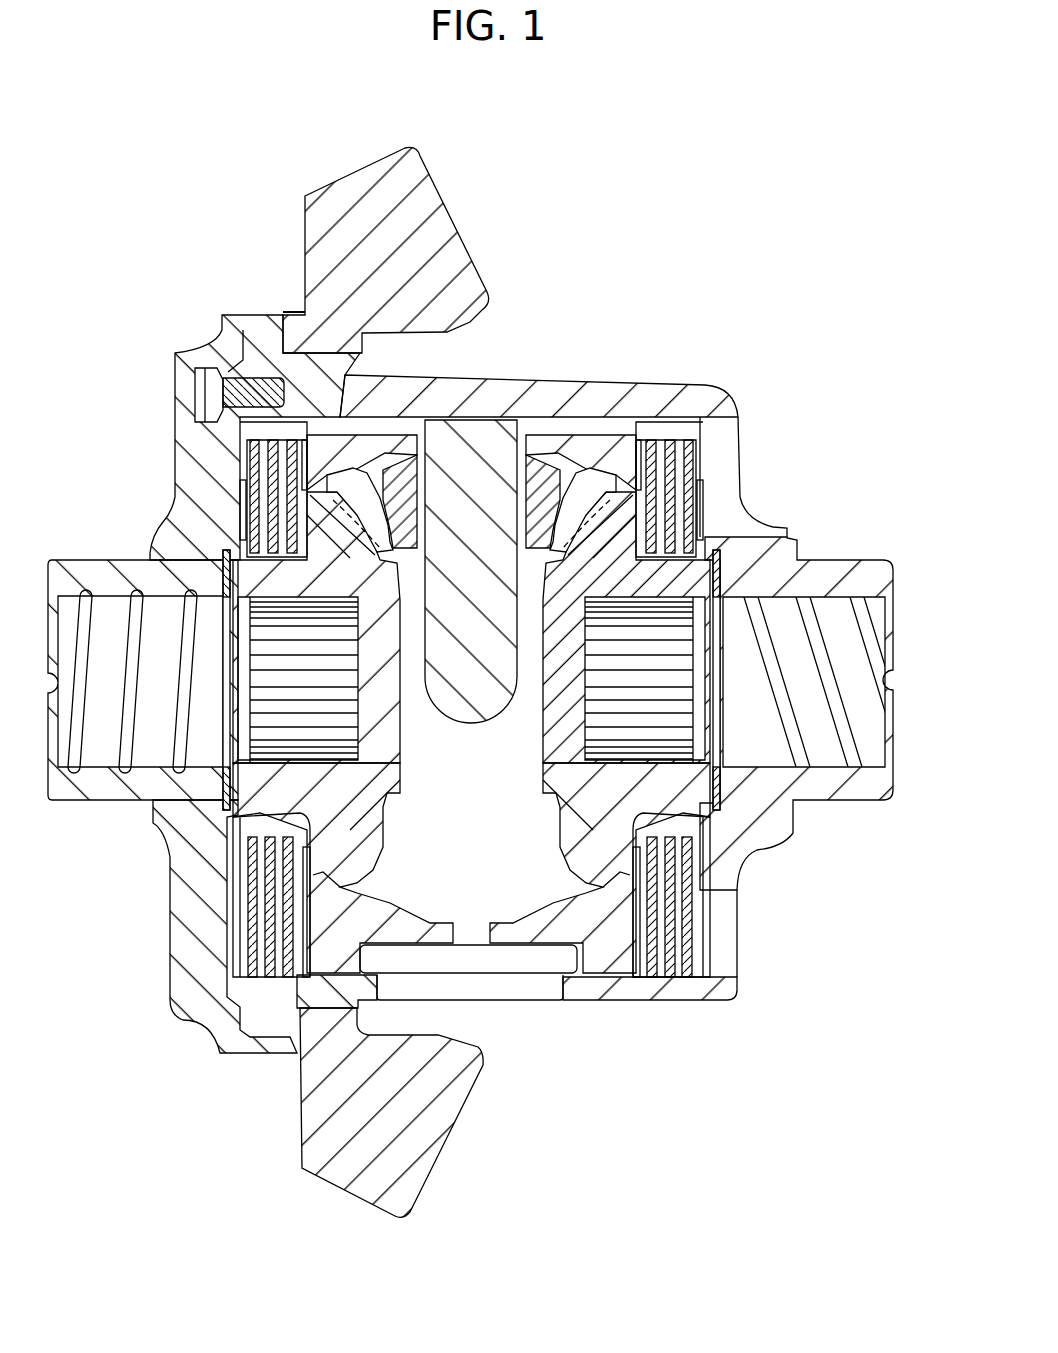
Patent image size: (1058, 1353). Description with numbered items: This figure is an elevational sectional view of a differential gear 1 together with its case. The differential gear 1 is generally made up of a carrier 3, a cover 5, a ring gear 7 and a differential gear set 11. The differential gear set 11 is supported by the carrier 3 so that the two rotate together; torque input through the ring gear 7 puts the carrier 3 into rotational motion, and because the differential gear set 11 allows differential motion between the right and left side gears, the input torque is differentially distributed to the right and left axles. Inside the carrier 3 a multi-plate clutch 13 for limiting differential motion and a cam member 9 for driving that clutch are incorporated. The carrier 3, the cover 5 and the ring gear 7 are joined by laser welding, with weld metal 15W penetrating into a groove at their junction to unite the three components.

The differential gear 1 is at (660, 135).
The carrier 3 is at (475, 374).
The cover 5 is at (218, 326).
The ring gear 7 is at (348, 172).
The cam member 9 is at (593, 437).
The differential gear set 11 is at (535, 352).
The multi-plate clutch 13 is at (655, 1020).
The weld metal 15W is at (281, 302).